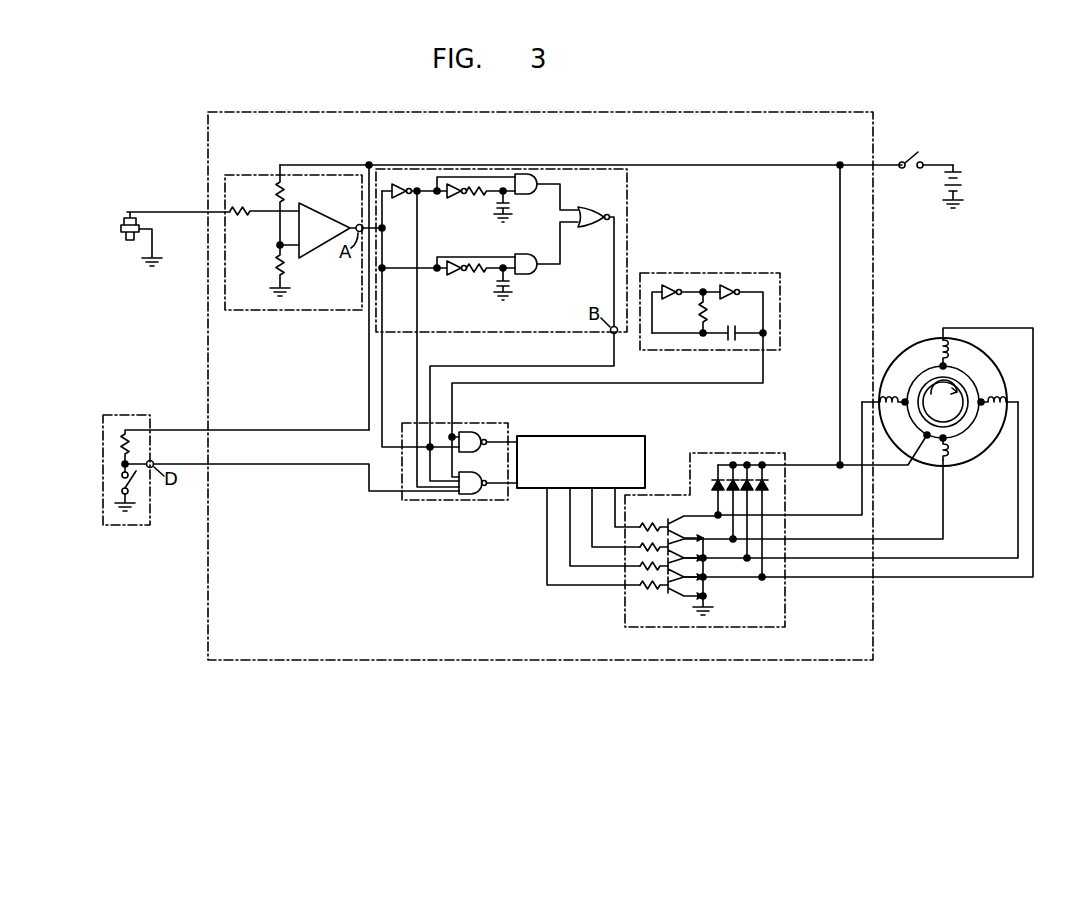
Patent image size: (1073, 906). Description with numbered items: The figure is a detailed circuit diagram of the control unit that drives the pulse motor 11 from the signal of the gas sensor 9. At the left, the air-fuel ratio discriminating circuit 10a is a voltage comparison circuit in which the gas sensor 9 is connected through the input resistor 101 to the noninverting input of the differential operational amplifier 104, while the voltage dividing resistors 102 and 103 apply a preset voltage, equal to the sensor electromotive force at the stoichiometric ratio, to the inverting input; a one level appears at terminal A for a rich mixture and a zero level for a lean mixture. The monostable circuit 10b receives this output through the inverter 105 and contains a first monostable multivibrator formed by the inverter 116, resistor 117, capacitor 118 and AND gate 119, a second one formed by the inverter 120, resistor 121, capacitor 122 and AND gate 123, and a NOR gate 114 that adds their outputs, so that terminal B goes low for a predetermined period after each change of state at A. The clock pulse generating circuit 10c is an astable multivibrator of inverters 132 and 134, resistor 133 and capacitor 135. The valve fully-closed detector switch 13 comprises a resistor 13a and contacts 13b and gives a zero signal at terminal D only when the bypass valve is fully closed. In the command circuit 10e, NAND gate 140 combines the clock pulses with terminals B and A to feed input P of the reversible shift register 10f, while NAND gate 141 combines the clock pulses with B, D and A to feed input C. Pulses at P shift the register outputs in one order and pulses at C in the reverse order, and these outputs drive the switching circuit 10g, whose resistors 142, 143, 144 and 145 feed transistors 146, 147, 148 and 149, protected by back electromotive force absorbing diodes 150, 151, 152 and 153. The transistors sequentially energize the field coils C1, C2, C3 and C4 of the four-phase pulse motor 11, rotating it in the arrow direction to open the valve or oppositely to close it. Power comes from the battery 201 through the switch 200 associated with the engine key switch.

The gas sensor 9 is at (127, 241).
The air-fuel ratio discriminating circuit 10a is at (245, 175).
The monostable circuit 10b is at (429, 169).
The clock pulse generating circuit 10c is at (770, 273).
The command circuit 10e is at (472, 423).
The reversible shift register 10f is at (590, 436).
The switching circuit 10g is at (786, 608).
The pulse motor 11 is at (990, 363).
The valve fully-closed detector switch 13 is at (123, 415).
The resistor 13a is at (134, 440).
The contacts 13b is at (139, 496).
The input resistor 101 is at (263, 225).
The voltage dividing resistor 102 is at (281, 186).
The voltage dividing resistor 103 is at (276, 262).
The differential operational amplifier 104 is at (338, 220).
The inverter 105 is at (420, 335).
The NOR gate 114 is at (590, 207).
The inverter 116 is at (456, 200).
The resistor 117 is at (485, 183).
The capacitor 118 is at (510, 206).
The AND gate 119 is at (524, 174).
The inverter 120 is at (456, 261).
The resistor 121 is at (487, 261).
The capacitor 122 is at (510, 284).
The AND gate 123 is at (526, 254).
The inverter 132 is at (668, 285).
The resistor 133 is at (699, 313).
The inverter 134 is at (732, 285).
The capacitor 135 is at (731, 328).
The NAND gate 140 is at (485, 447).
The NAND gate 141 is at (482, 496).
The resistor 142 is at (680, 502).
The resistor 143 is at (640, 546).
The resistor 144 is at (640, 572).
The resistor 145 is at (650, 590).
The transistor 146 is at (684, 524).
The transistor 147 is at (704, 550).
The transistor 148 is at (706, 569).
The transistor 149 is at (715, 582).
The back electromotive force absorbing diode 150 is at (712, 478).
The back electromotive force absorbing diode 151 is at (730, 478).
The back electromotive force absorbing diode 152 is at (746, 478).
The back electromotive force absorbing diode 153 is at (760, 478).
The switch 200 is at (912, 151).
The battery 201 is at (942, 190).
The field coil C1 is at (880, 397).
The field coil C2 is at (946, 465).
The field coil C3 is at (994, 410).
The field coil C4 is at (936, 348).